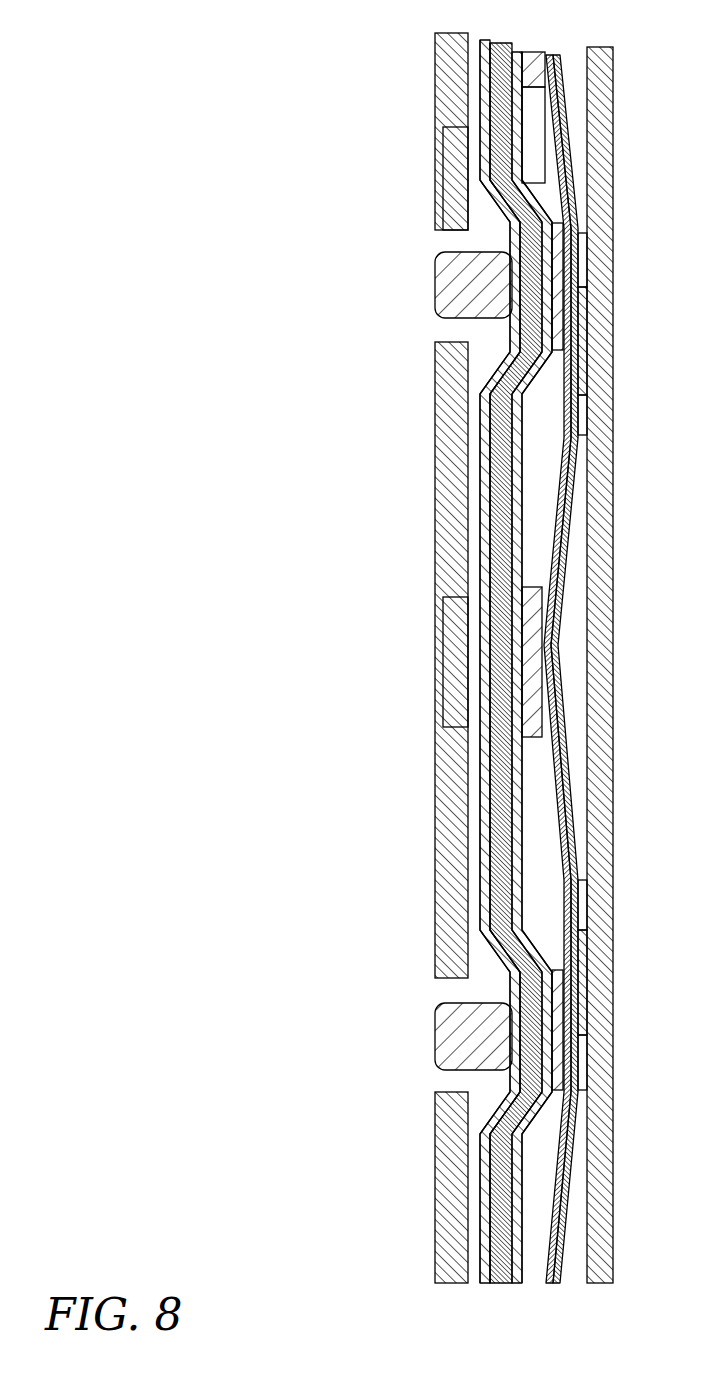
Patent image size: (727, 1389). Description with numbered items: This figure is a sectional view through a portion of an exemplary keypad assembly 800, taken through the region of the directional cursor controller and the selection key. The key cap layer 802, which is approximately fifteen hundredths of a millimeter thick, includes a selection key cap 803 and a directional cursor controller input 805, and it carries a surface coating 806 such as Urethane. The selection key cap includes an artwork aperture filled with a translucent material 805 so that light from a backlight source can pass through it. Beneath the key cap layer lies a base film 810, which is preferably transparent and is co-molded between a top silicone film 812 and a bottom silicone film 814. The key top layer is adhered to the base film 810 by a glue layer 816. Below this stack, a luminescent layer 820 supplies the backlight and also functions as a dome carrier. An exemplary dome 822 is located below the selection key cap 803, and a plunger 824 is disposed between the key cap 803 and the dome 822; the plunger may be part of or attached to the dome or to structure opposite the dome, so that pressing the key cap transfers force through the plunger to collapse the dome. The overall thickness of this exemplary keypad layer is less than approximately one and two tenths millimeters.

The keypad assembly 800 is at (185, 63).
The key cap layer 802 is at (490, 572).
The selection key cap 803 is at (437, 781).
The directional cursor controller input 805 is at (443, 178).
The surface coating 806 is at (483, 590).
The base film 810 is at (547, 517).
The top silicone film 812 is at (532, 535).
The bottom silicone film 814 is at (553, 498).
The glue layer 816 is at (498, 553).
The luminescent layer 820 is at (557, 623).
The dome 822 is at (560, 692).
The plunger 824 is at (533, 660).